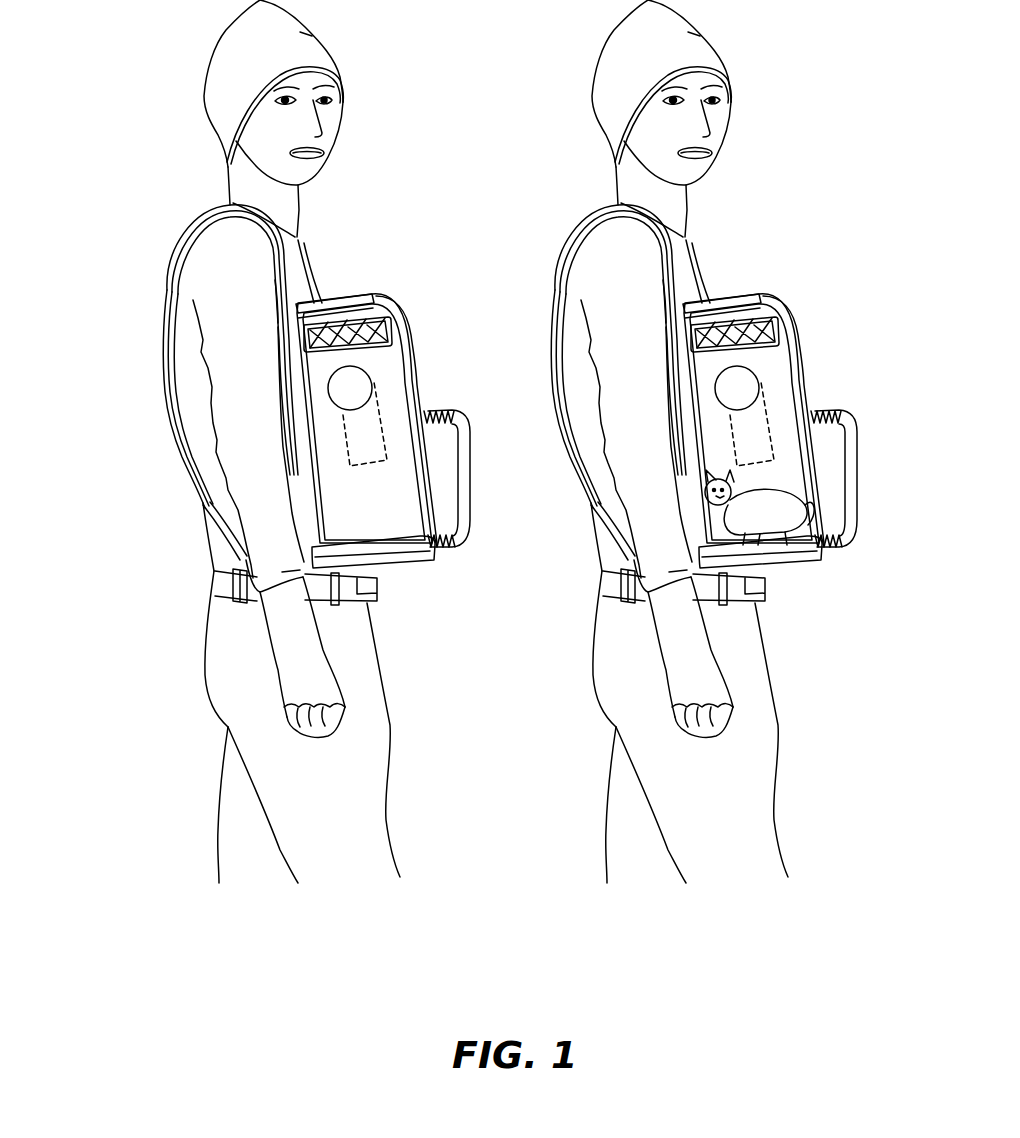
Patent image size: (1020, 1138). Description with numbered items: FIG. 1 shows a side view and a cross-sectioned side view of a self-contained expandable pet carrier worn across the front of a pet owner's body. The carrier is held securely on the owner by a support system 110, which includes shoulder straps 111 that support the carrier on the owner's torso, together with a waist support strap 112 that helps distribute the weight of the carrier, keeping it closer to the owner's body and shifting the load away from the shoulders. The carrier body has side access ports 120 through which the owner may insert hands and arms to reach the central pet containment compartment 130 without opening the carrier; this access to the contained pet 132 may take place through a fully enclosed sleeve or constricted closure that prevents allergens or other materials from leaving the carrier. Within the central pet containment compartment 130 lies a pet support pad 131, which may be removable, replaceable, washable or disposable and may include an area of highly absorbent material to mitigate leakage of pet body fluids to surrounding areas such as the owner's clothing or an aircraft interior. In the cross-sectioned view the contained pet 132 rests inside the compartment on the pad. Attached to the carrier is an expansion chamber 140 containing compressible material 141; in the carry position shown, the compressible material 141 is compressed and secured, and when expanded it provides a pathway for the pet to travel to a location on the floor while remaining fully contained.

The support system 110 is at (184, 233).
The shoulder straps 111 is at (148, 336).
The waist support strap 112 is at (196, 523).
The side access ports 120 is at (380, 367).
The central pet containment compartment 130 is at (382, 498).
The pet support pad 131 is at (380, 567).
The contained pet 132 is at (785, 532).
The expansion chamber 140 is at (477, 510).
The compressible material 141 is at (442, 413).